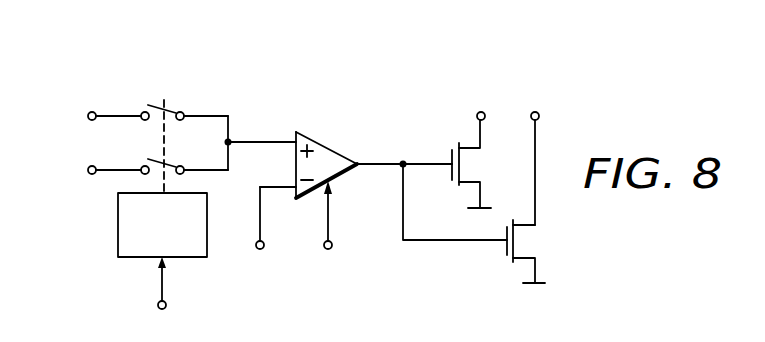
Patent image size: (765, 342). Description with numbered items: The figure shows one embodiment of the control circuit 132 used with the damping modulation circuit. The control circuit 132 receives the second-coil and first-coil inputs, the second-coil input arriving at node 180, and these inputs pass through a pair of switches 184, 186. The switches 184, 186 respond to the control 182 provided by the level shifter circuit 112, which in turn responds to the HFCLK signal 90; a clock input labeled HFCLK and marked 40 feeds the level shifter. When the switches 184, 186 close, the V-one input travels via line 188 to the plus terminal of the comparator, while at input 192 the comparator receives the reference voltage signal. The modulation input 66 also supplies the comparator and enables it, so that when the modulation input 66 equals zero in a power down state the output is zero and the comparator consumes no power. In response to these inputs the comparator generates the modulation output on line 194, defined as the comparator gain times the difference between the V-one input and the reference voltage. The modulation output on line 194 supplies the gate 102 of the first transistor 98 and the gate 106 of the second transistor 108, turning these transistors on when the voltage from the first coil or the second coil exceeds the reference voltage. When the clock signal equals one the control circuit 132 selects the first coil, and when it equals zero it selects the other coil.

The control 182 is at (92, 110).
The node 180 is at (91, 176).
The switch 186 is at (201, 102).
The switch 184 is at (201, 156).
The level shifter circuit 112 is at (118, 249).
The HFCLK clock input 40 is at (160, 285).
The line 188 is at (243, 147).
The HFCLK signal 90 is at (338, 147).
The input 192 is at (280, 188).
The modulation input 66 is at (333, 227).
The line 194 is at (370, 166).
The gate 102 is at (423, 166).
The ND1 transistor 98 is at (446, 128).
The control circuit 132 is at (467, 63).
The gate 106 is at (435, 242).
The ND2 transistor 108 is at (501, 272).